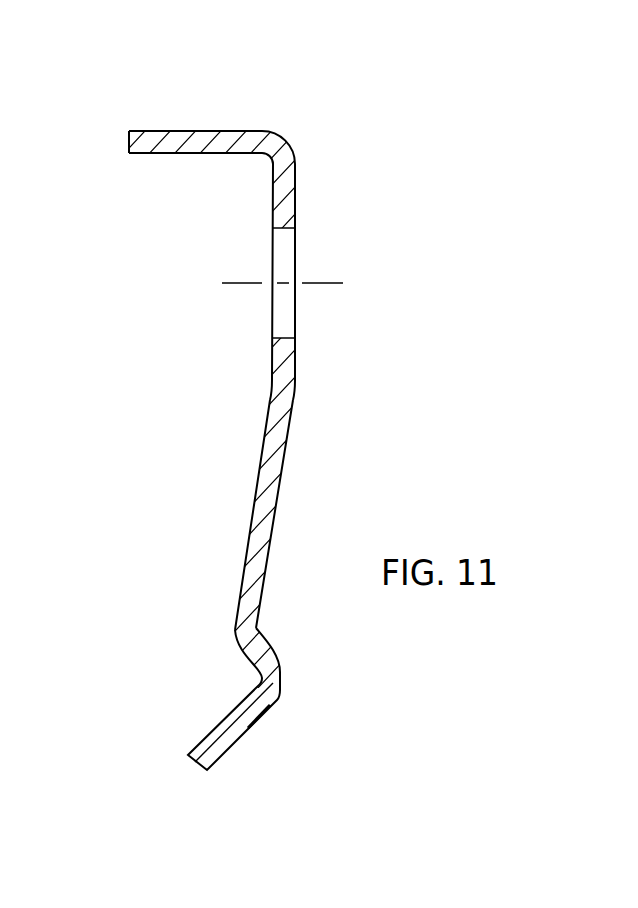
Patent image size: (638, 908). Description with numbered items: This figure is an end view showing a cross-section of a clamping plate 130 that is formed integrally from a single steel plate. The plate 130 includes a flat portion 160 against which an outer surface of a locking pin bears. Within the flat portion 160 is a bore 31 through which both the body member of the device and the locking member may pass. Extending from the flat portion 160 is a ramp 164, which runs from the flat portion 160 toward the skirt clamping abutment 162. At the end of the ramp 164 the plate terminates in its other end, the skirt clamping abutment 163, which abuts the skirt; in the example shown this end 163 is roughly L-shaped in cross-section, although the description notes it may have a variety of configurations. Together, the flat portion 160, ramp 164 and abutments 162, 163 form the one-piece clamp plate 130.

The clamping plate 130 is at (259, 412).
The ramp 164 is at (220, 128).
The flat portion 160 is at (287, 373).
The bore 31 is at (287, 258).
The skirt clamping abutment 162 is at (262, 447).
The skirt clamping abutment 163 is at (277, 678).